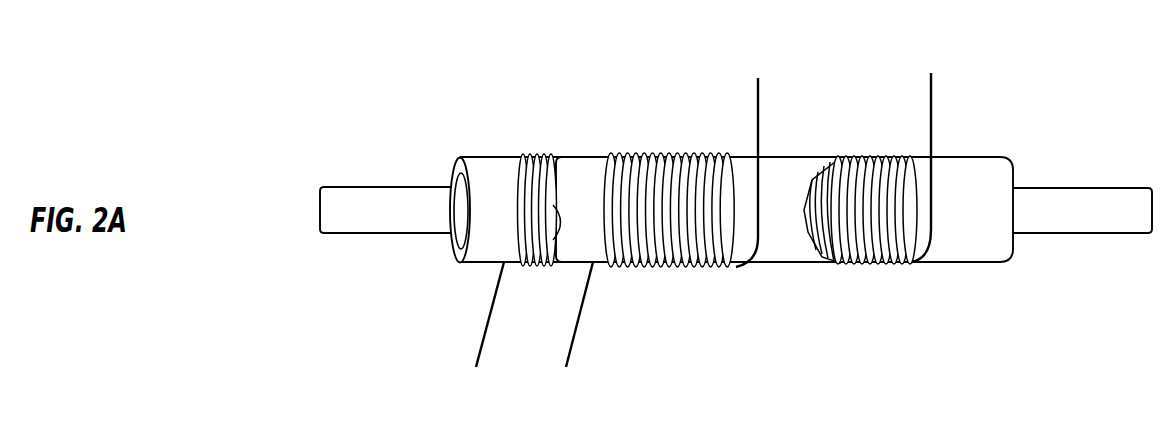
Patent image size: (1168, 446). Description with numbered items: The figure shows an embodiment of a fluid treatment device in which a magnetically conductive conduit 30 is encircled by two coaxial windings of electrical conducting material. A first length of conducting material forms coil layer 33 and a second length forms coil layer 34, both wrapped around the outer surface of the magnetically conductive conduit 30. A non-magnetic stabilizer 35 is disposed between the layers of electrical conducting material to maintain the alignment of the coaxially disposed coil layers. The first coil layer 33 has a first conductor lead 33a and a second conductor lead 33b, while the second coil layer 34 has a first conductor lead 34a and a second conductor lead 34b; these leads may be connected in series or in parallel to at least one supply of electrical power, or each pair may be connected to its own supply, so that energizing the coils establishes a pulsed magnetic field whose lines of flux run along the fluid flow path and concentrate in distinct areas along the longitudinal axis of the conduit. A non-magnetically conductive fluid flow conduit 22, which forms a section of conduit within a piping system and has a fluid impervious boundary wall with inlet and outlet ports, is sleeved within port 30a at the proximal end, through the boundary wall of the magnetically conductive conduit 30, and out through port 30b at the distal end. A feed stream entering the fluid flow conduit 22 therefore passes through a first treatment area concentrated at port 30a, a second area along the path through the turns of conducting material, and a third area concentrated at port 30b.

The fluid flow conduit 22 is at (393, 225).
The magnetically conductive conduit 30 is at (503, 219).
The port 30a is at (452, 170).
The port 30b is at (1012, 248).
The coil layer 33 is at (866, 160).
The first conductor lead 33a is at (478, 335).
The second conductor lead 33b is at (932, 90).
The coil layer 34 is at (670, 152).
The first conductor lead 34a is at (578, 335).
The second conductor lead 34b is at (759, 90).
The non-magnetic stabilizer 35 is at (798, 243).